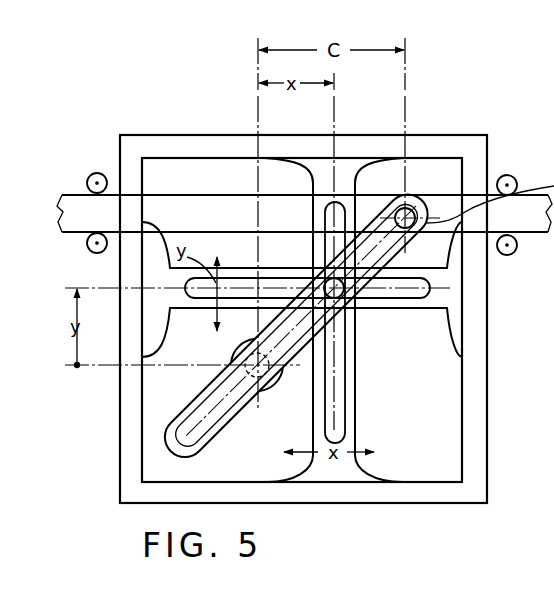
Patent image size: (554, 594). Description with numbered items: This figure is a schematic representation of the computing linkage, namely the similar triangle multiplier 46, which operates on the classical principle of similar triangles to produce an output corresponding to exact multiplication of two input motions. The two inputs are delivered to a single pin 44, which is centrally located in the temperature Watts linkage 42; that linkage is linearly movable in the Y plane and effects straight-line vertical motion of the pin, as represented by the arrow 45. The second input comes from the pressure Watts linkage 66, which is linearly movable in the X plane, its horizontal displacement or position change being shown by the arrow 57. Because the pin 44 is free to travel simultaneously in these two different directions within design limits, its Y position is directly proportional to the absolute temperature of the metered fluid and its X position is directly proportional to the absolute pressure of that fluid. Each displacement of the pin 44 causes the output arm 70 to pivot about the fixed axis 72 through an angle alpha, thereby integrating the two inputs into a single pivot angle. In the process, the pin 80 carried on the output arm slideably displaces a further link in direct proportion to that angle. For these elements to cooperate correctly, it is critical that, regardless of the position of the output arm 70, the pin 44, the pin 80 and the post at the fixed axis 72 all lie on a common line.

The similar triangle multiplier 46 is at (183, 117).
The pin 80 is at (504, 177).
The Watts linkage 42 is at (252, 265).
The arrow 45 is at (213, 291).
The Watts linkage 66 is at (313, 409).
The arrow 57 is at (312, 451).
The output arm 70 is at (197, 400).
The fixed axis 72 is at (236, 354).
The pin 44 is at (323, 274).